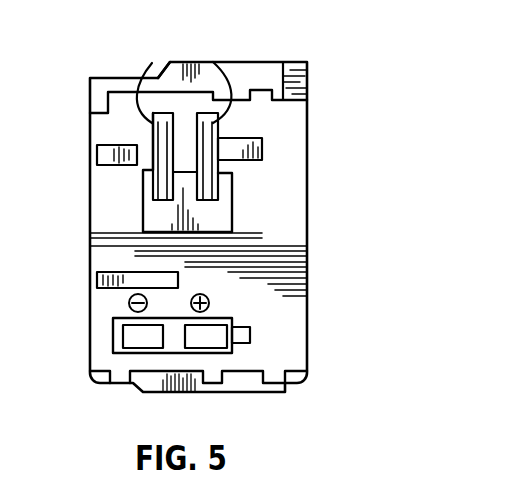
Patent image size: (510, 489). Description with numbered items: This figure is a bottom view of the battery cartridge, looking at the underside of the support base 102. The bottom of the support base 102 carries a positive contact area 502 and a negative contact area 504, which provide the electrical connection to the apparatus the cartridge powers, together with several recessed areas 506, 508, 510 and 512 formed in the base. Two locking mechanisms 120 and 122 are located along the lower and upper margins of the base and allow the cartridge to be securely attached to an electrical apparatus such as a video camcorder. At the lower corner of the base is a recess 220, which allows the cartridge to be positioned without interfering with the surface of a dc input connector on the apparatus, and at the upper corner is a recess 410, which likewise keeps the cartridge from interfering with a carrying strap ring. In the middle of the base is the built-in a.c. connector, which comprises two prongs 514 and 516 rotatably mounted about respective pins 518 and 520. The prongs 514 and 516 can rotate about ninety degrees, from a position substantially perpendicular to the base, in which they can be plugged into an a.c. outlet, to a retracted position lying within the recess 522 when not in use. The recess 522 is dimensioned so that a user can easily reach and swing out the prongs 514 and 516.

The support base 102 is at (292, 200).
The locking mechanism 120 is at (255, 374).
The locking mechanism 122 is at (243, 80).
The recess 220 is at (116, 386).
The recess 410 is at (104, 78).
The positive contact area 502 is at (213, 332).
The negative contact area 504 is at (133, 337).
The recessed area 506 is at (232, 150).
The recessed area 508 is at (258, 312).
The recessed area 510 is at (98, 153).
The recessed area 512 is at (107, 278).
The prong 514 is at (147, 183).
The prong 516 is at (213, 185).
The pin 518 is at (155, 77).
The pin 520 is at (212, 62).
The recess 522 is at (222, 215).